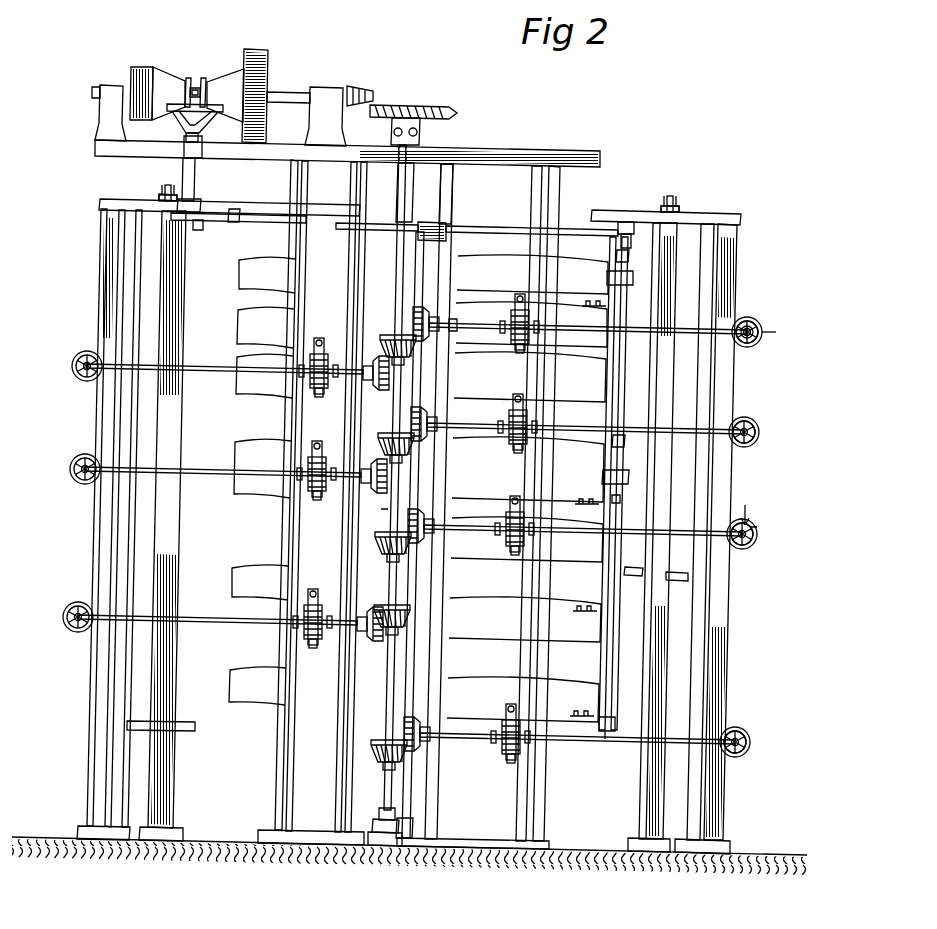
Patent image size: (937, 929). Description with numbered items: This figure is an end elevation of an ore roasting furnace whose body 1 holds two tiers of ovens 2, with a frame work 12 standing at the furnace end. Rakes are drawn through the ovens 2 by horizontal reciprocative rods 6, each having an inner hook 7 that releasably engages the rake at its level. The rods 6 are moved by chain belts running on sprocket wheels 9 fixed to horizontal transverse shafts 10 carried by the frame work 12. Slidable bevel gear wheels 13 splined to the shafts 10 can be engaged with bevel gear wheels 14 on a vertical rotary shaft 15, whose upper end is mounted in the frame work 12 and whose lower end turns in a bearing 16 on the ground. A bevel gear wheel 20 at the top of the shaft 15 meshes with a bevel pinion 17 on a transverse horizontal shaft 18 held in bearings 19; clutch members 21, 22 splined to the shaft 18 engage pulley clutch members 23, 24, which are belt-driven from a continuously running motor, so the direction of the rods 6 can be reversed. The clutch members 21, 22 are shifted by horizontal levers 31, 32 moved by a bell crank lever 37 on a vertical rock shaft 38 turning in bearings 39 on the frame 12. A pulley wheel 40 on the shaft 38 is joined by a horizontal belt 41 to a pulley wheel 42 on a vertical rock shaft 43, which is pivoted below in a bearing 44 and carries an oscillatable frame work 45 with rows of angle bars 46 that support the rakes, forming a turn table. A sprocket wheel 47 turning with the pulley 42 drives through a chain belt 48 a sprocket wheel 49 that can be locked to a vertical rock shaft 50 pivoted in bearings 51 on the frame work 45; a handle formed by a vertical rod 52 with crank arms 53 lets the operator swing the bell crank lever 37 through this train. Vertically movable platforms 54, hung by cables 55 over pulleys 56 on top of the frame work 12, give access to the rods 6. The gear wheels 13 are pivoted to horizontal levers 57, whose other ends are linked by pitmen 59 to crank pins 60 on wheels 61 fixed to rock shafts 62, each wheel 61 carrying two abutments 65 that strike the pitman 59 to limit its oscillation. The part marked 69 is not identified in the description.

The furnace body 1 is at (192, 842).
The ovens 2 is at (239, 296).
The reciprocative rods 6 is at (319, 343).
The hook 7 is at (569, 513).
The sprocket wheels 9 is at (507, 760).
The transverse shafts 10 is at (327, 356).
The frame work 12 is at (518, 153).
The bevel gear wheels 13 is at (424, 313).
The bevel gear wheels 14 is at (384, 345).
The vertical rotary shaft 15 is at (413, 205).
The bearing 16 is at (379, 821).
The bevel pinion 17 is at (362, 86).
The transverse horizontal shaft 18 is at (294, 92).
The bearings 19 is at (110, 85).
The bevel gear wheel 20 is at (449, 109).
The clutch member 21 is at (172, 64).
The clutch member 22 is at (232, 71).
The pulley clutch member 23 is at (150, 66).
The pulley clutch member 24 is at (261, 50).
The horizontal lever 31 is at (182, 92).
The horizontal lever 32 is at (209, 112).
The bell crank lever 37 is at (180, 124).
The vertical rock shaft 38 is at (195, 180).
The bearings 39 is at (184, 147).
The pulley wheel 40 is at (204, 230).
The horizontal belt 41 is at (284, 223).
The pulley wheel 42 is at (452, 214).
The vertical rock shaft 43 is at (408, 232).
The bearings 44 is at (413, 823).
The oscillatable frame work 45 is at (602, 646).
The angle bars 46 is at (595, 304).
The sprocket wheel 47 is at (446, 238).
The chain belt 48 is at (517, 229).
The sprocket wheel 49 is at (621, 237).
The vertical rock shaft 50 is at (626, 378).
The bearings 51 is at (629, 256).
The handle rod 52 is at (620, 499).
The crank arms 53 is at (631, 281).
The platforms 54 is at (634, 567).
The cables 55 is at (168, 185).
The pulleys 56 is at (687, 198).
The horizontal levers 57 is at (456, 326).
The pitmen 59 is at (628, 763).
The crank pins 60 is at (82, 374).
The wheels 61 is at (81, 352).
The rock shafts 62 is at (756, 326).
The abutments 65 is at (703, 353).
The bracket 69 is at (237, 210).